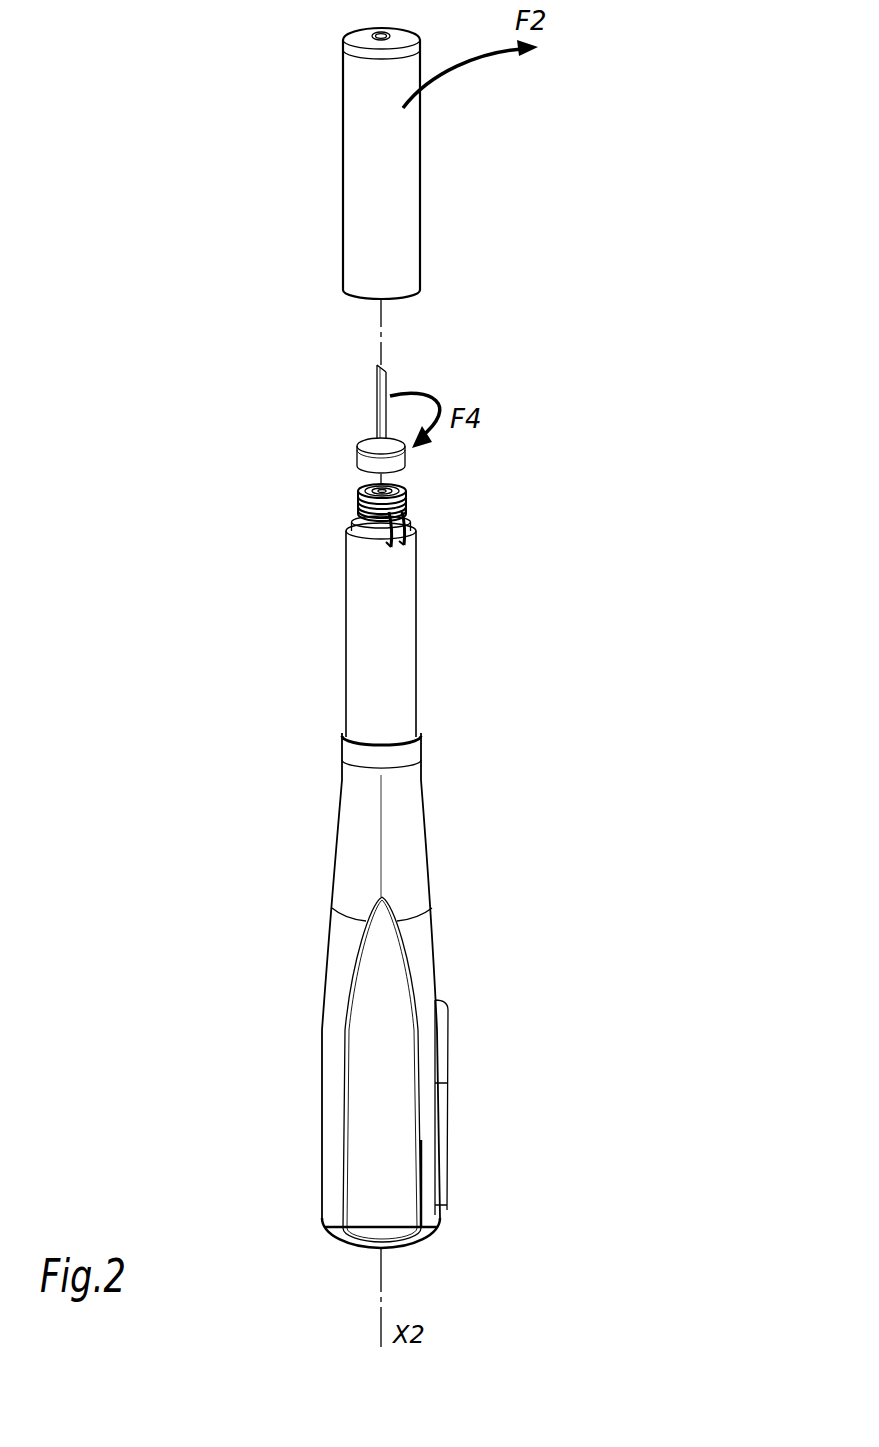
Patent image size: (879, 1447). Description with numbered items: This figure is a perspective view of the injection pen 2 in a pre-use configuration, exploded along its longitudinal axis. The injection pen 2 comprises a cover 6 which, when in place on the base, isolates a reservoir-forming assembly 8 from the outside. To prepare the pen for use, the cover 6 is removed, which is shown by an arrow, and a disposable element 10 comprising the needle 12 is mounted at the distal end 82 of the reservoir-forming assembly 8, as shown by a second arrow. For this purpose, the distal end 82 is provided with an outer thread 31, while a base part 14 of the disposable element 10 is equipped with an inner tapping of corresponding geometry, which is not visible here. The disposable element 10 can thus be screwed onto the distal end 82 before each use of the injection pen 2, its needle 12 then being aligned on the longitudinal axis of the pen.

The injection pen 2 is at (481, 915).
The cover 6 is at (403, 153).
The reservoir-forming assembly 8 is at (395, 607).
The disposable element 10 is at (367, 443).
The needle 12 is at (377, 387).
The base part 14 is at (360, 460).
The outer thread 31 is at (407, 508).
The distal end 82 is at (345, 502).